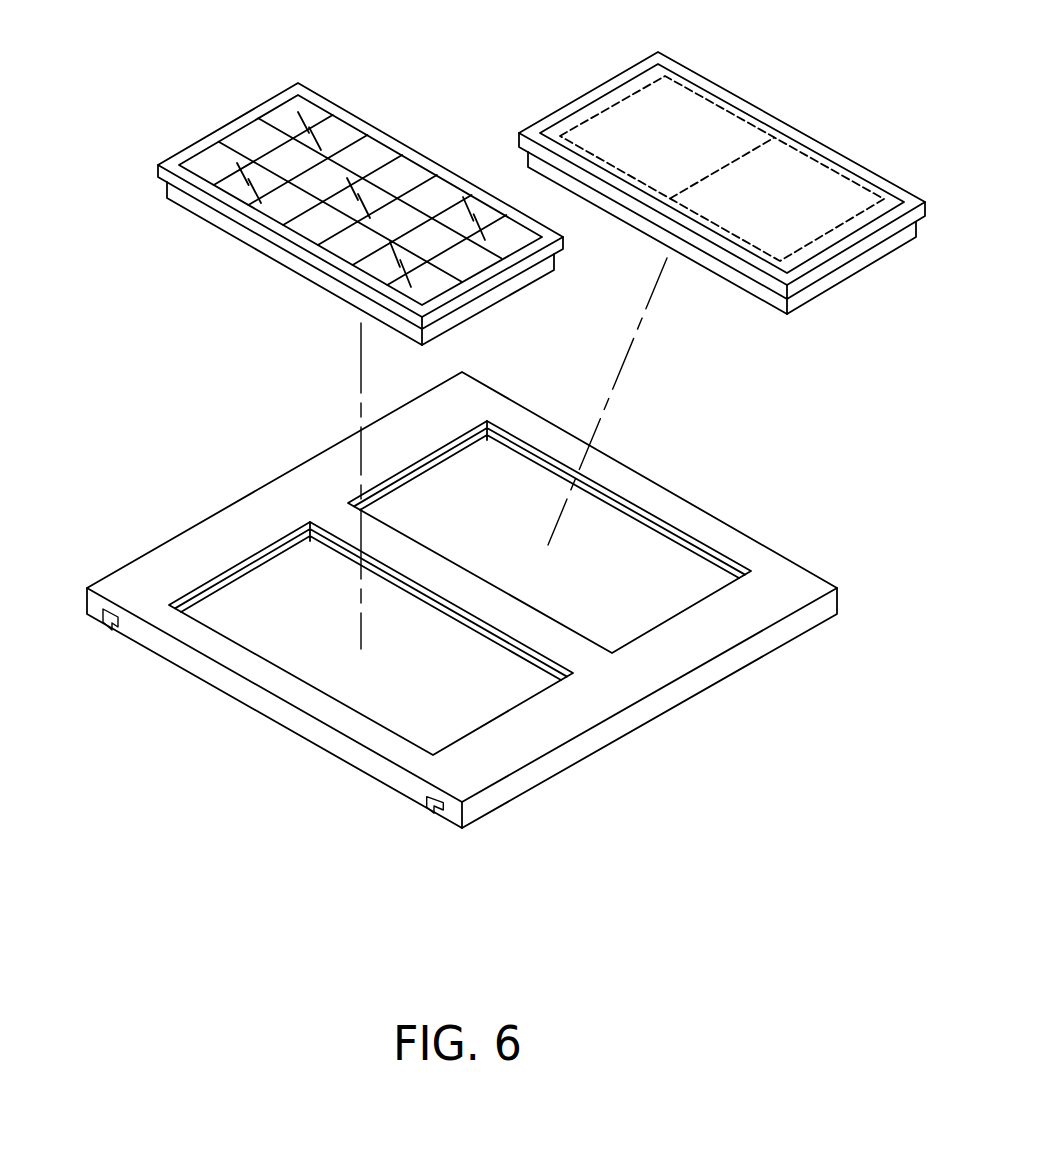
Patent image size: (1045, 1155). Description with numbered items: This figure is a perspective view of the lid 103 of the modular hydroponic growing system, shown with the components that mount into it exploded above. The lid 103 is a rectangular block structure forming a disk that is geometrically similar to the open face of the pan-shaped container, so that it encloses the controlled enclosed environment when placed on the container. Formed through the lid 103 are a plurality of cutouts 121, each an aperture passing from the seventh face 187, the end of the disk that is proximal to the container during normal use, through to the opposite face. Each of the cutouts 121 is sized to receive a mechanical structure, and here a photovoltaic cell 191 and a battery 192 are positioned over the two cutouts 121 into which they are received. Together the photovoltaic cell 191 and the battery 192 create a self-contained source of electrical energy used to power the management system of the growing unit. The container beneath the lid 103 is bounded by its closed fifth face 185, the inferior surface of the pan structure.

The lid 103 is at (478, 625).
The plurality of cutouts 121 is at (487, 695).
The fifth face 185 is at (177, 553).
The seventh face 187 is at (505, 805).
The photovoltaic cell 191 is at (358, 157).
The battery 192 is at (707, 122).